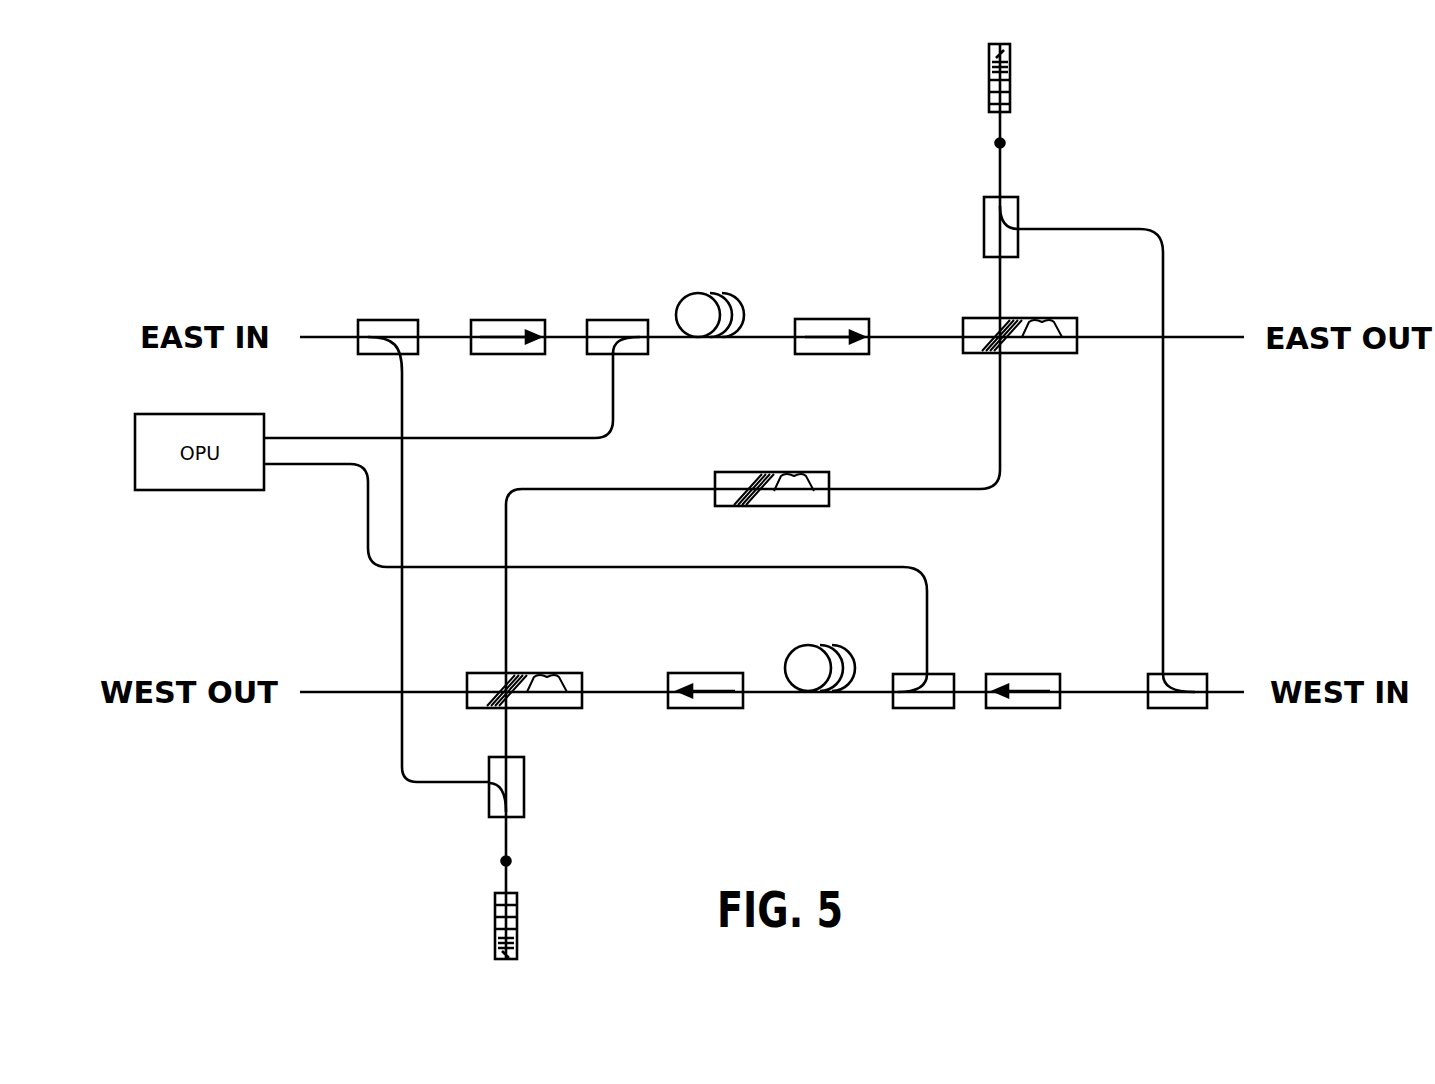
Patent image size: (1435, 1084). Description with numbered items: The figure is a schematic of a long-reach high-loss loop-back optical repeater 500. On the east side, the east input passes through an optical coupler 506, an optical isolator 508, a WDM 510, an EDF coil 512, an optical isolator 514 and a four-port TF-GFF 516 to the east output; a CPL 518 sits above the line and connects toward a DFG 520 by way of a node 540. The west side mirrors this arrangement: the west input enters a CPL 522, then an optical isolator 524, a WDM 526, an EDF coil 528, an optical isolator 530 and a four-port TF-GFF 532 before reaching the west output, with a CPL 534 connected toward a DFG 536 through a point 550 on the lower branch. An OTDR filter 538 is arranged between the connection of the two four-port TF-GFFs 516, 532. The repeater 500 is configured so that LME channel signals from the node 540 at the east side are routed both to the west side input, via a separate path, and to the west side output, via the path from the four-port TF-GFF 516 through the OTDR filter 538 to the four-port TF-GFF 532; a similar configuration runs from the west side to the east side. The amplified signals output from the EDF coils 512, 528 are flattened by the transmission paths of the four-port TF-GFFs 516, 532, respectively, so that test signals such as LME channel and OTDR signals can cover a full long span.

The long-reach HLLB optical repeater 500 is at (758, 868).
The optical coupler (CPL) 506 is at (423, 531).
The optical isolator 508 is at (508, 366).
The WDM 510 is at (617, 316).
The EDF coil 512 is at (710, 291).
The optical isolator 514 is at (832, 366).
The 4-port TF-GFF 516 is at (1035, 314).
The CPL 518 is at (1048, 435).
The DFG 520 is at (1044, 78).
The CPL 522 is at (1177, 718).
The optical isolator 524 is at (1023, 718).
The WDM 526 is at (923, 718).
The EDF coil 528 is at (820, 643).
The optical isolator 530 is at (705, 718).
The 4-port TF-GFF 532 is at (542, 669).
The CPL 534 is at (530, 787).
The DFG 536 is at (477, 926).
The OTDR filter 538 is at (772, 503).
The node 540 is at (1025, 144).
The connection point 550 is at (477, 862).